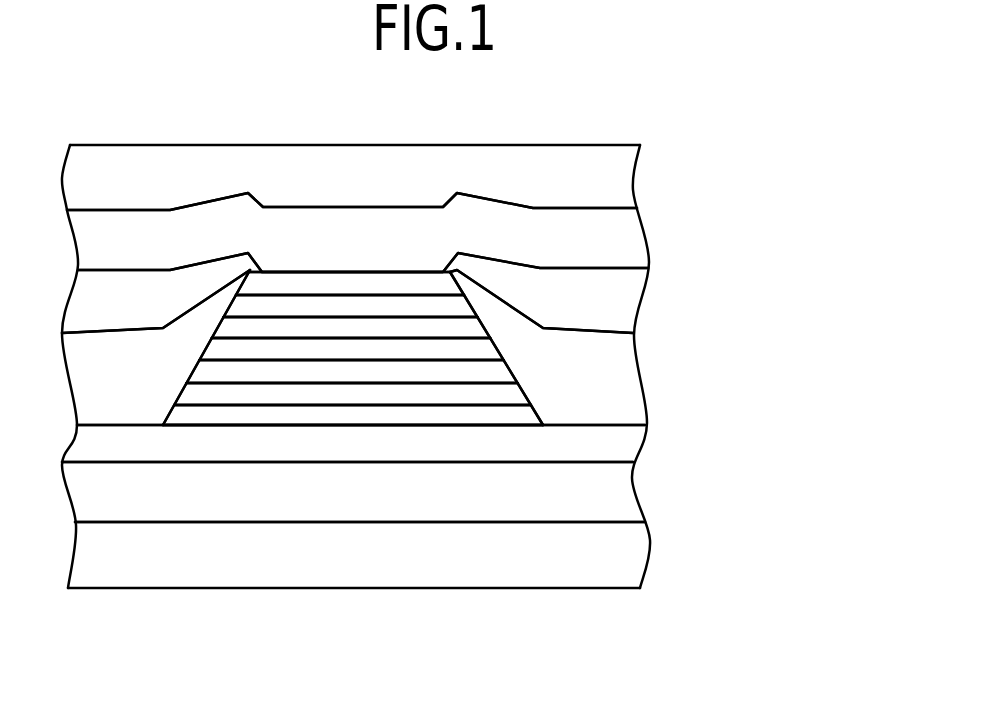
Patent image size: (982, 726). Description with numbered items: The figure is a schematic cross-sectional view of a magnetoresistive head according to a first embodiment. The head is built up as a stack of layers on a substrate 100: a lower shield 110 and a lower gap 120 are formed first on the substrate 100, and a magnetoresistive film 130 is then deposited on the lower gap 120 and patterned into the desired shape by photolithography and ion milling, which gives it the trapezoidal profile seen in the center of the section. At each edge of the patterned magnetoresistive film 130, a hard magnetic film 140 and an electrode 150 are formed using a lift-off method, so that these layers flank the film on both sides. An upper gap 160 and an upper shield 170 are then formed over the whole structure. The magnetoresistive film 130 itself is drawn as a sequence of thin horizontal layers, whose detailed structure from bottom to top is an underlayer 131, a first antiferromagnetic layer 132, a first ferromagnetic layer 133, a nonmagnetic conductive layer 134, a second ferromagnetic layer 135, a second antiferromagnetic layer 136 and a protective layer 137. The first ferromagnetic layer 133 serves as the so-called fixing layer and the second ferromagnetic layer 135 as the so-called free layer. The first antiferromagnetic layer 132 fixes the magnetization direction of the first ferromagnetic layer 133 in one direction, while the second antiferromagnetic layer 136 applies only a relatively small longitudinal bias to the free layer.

The substrate 100 is at (356, 555).
The lower shield 110 is at (353, 492).
The lower gap 120 is at (353, 443).
The magnetoresistive film 130 is at (787, 188).
The underlayer 131 is at (525, 412).
The first antiferromagnetic layer 132 is at (512, 395).
The first ferromagnetic layer 133 is at (497, 372).
The nonmagnetic conductive layer 134 is at (482, 352).
The second ferromagnetic layer 135 is at (468, 330).
The second antiferromagnetic layer 136 is at (455, 308).
The protective layer 137 is at (440, 287).
The hard magnetic film 140 is at (353, 347).
The electrode 150 is at (355, 293).
The upper gap 160 is at (357, 232).
The upper shield 170 is at (353, 177).